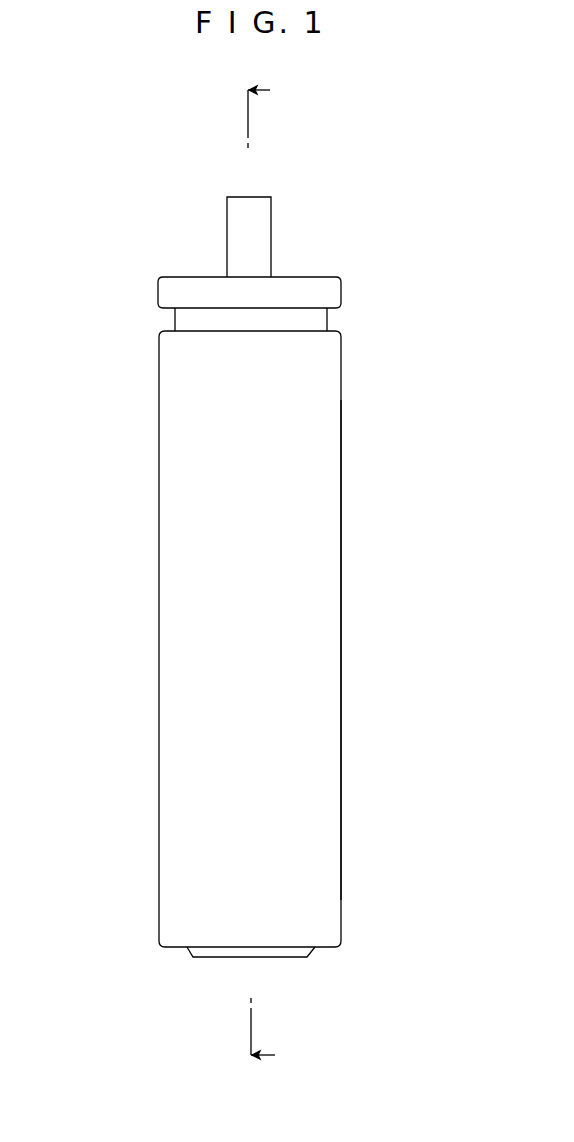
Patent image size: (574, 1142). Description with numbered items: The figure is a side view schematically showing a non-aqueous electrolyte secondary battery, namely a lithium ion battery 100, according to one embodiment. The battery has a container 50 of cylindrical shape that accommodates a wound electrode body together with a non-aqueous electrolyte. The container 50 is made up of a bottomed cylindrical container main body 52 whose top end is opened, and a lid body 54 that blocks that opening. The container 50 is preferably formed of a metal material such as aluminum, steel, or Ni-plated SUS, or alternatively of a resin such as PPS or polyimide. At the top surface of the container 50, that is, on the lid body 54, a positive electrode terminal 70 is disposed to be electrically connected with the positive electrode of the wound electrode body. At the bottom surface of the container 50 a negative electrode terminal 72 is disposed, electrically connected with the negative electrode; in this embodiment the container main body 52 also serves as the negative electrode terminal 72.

The lithium ion battery 100 is at (372, 253).
The container 50 is at (158, 752).
The container main body 52 is at (328, 735).
The lid body 54 is at (177, 290).
The positive electrode terminal 70 is at (263, 197).
The negative electrode terminal 72 is at (212, 953).